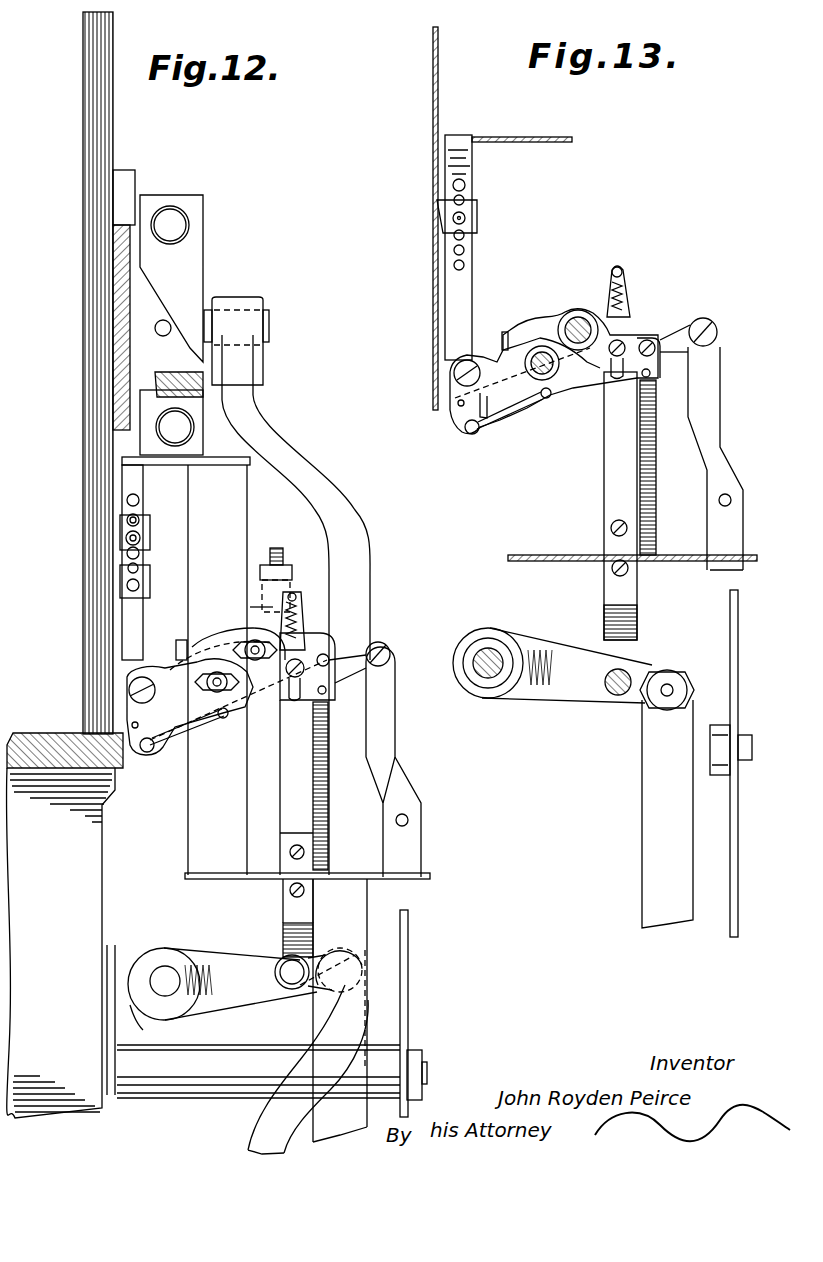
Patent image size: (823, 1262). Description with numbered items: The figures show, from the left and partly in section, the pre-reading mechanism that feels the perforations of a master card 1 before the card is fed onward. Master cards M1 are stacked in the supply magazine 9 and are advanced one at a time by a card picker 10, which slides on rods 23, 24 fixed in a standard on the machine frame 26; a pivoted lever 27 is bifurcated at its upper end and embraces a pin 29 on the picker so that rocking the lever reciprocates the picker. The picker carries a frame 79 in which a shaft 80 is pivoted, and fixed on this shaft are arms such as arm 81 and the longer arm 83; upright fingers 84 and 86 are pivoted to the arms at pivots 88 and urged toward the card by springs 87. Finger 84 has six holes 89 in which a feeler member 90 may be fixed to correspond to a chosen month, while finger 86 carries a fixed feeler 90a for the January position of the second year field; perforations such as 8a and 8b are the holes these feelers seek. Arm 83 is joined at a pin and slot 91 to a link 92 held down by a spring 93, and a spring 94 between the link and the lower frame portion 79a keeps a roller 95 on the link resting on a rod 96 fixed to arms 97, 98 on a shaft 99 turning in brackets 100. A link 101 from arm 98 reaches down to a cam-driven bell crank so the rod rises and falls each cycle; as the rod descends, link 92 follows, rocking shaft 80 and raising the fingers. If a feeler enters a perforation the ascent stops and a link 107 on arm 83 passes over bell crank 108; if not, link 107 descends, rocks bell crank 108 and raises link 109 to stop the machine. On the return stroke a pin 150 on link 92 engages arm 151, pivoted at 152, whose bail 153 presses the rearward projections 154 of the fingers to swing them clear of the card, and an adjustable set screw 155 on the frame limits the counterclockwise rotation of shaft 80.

In FIG. 12, the master cards M1 is at (103, 78).
In FIG. 13, the master card 1 is at (432, 82).
In FIG. 13, the perforation 8a is at (433, 255).
In FIG. 13, the perforation 8b is at (436, 208).
In FIG. 12, the supply magazine 9 is at (81, 300).
In FIG. 12, the card picker 10 is at (196, 258).
In FIG. 12, the rod 23 is at (172, 227).
In FIG. 12, the rod 24 is at (186, 428).
In FIG. 12, the frame 26 is at (88, 858).
In FIG. 12, the lever 27 is at (355, 571).
In FIG. 12, the pin 29 is at (236, 327).
In FIG. 12, the frame 79 is at (205, 855).
In FIG. 12, the lower portion of frame 79a is at (426, 877).
In FIG. 13, the lower portion of frame 79a is at (540, 556).
In FIG. 13, the shaft 80 is at (546, 385).
In FIG. 13, the arm 81 is at (583, 378).
In FIG. 12, the arm 83 is at (356, 680).
In FIG. 13, the arm 83 is at (682, 352).
In FIG. 13, the finger 84 is at (460, 170).
In FIG. 12, the finger 86 is at (125, 623).
In FIG. 12, the spring 87 is at (178, 748).
In FIG. 13, the spring 87 is at (511, 420).
In FIG. 12, the pivot 88 is at (135, 695).
In FIG. 13, the pivot 88 is at (454, 375).
In FIG. 12, the holes 89 is at (120, 506).
In FIG. 13, the holes 89 is at (466, 265).
In FIG. 12, the feeler member 90 is at (150, 538).
In FIG. 13, the feeler member 90 is at (478, 232).
In FIG. 12, the feeler 90a is at (150, 590).
In FIG. 12, the pin and slot connection 91 is at (294, 700).
In FIG. 13, the pin and slot connection 91 is at (464, 216).
In FIG. 12, the link 92 is at (298, 788).
In FIG. 13, the link 92 is at (616, 468).
In FIG. 12, the spring 93 is at (302, 616).
In FIG. 12, the spring 94 is at (322, 792).
In FIG. 13, the spring 94 is at (646, 498).
In FIG. 12, the roller 95 is at (290, 934).
In FIG. 13, the roller 95 is at (615, 622).
In FIG. 12, the rod 96 is at (292, 978).
In FIG. 13, the rod 96 is at (632, 681).
In FIG. 12, the arm 97 is at (218, 965).
In FIG. 12, the arm 98 is at (330, 958).
In FIG. 13, the arm 98 is at (572, 688).
In FIG. 12, the shaft 99 is at (165, 980).
In FIG. 13, the shaft 99 is at (490, 672).
In FIG. 12, the brackets 100 is at (150, 1021).
In FIG. 12, the link 101 is at (348, 1120).
In FIG. 13, the link 101 is at (650, 870).
In FIG. 12, the link 107 is at (400, 792).
In FIG. 13, the link 107 is at (722, 462).
In FIG. 12, the bell crank 108 is at (404, 950).
In FIG. 13, the bell crank 108 is at (736, 650).
In FIG. 12, the link 109 is at (412, 1106).
In FIG. 13, the link 109 is at (740, 880).
In FIG. 12, the pin 150 is at (389, 652).
In FIG. 13, the pin 150 is at (653, 344).
In FIG. 12, the arm 151 is at (338, 648).
In FIG. 13, the arm 151 is at (644, 330).
In FIG. 13, the pivot 152 is at (578, 316).
In FIG. 12, the bail 153 is at (182, 662).
In FIG. 13, the bail 153 is at (506, 340).
In FIG. 12, the rearward projections 154 is at (200, 685).
In FIG. 13, the rearward projections 154 is at (470, 352).
In FIG. 12, the adjustable set screw 155 is at (276, 556).
In FIG. 13, the adjustable set screw 155 is at (618, 291).